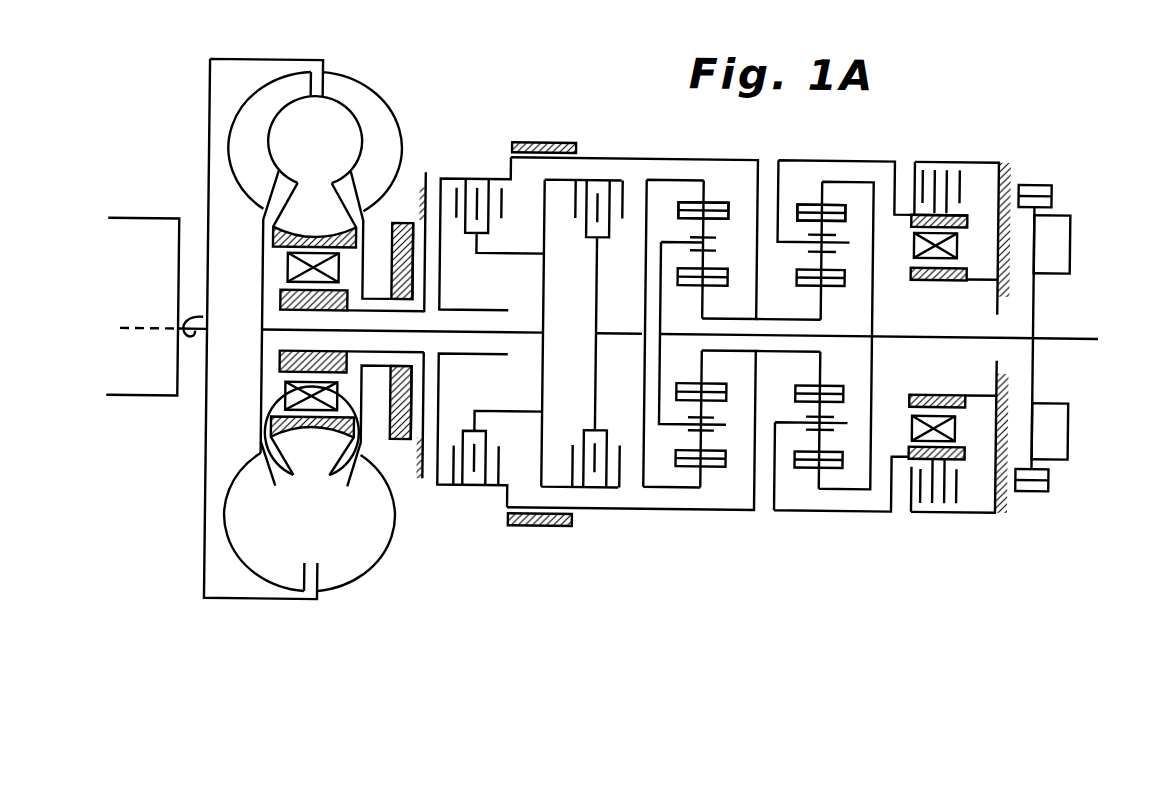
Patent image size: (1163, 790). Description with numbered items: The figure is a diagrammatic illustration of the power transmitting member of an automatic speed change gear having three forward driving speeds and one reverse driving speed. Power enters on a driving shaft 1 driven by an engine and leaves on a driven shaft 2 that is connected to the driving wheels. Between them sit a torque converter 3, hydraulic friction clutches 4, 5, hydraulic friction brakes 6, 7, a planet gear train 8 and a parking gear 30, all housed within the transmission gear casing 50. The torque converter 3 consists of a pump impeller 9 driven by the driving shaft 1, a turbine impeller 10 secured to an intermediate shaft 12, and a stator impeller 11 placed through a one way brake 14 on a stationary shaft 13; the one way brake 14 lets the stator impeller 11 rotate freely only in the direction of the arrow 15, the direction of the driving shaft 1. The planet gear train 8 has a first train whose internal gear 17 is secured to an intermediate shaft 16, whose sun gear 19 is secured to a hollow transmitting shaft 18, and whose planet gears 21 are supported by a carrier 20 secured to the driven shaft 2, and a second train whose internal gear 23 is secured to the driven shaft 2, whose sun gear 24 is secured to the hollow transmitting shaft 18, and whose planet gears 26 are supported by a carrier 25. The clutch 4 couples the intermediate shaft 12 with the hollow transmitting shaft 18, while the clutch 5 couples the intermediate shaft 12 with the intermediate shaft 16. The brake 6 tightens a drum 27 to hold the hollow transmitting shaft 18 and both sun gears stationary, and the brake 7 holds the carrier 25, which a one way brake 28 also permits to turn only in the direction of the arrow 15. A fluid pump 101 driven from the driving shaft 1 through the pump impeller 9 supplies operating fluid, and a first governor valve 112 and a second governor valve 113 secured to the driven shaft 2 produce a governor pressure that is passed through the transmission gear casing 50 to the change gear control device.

The driving shaft 1 is at (182, 330).
The driven shaft 2 is at (1065, 329).
The torque converter 3 is at (369, 86).
The hydraulic friction clutch 4 is at (476, 170).
The hydraulic friction clutch 5 is at (609, 174).
The hydraulic friction brake 6 is at (540, 139).
The hydraulic friction brake 7 is at (933, 153).
The planet gear train 8 is at (722, 196).
The pump impeller 9 is at (381, 129).
The turbine impeller 10 is at (258, 158).
The stator impeller 11 is at (310, 202).
The intermediate shaft 12 is at (277, 335).
The stationary shaft 13 is at (410, 311).
The one way brake 14 is at (285, 267).
The arrow 15 is at (205, 318).
The intermediate shaft 16 is at (621, 328).
The internal gear 17 is at (676, 198).
The hollow transmitting shaft 18 is at (774, 350).
The sun gear 19 is at (713, 282).
The carrier 20 is at (662, 294).
The planet gears 21 is at (725, 260).
The internal gear 23 is at (836, 197).
The sun gear 24 is at (806, 282).
The carrier 25 is at (771, 222).
The planet gears 26 is at (798, 262).
The drum 27 is at (588, 153).
The one way brake 28 is at (912, 240).
The parking gear 30 is at (1034, 175).
The transmission gear casing 50 is at (425, 172).
The fluid pump 101 is at (413, 439).
The first governor valve 112 is at (1069, 428).
The second governor valve 113 is at (1069, 236).